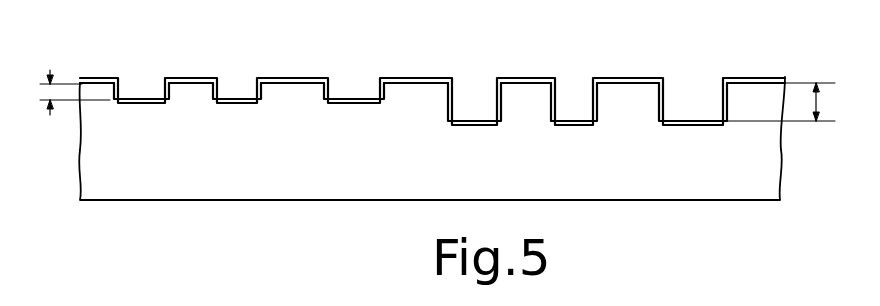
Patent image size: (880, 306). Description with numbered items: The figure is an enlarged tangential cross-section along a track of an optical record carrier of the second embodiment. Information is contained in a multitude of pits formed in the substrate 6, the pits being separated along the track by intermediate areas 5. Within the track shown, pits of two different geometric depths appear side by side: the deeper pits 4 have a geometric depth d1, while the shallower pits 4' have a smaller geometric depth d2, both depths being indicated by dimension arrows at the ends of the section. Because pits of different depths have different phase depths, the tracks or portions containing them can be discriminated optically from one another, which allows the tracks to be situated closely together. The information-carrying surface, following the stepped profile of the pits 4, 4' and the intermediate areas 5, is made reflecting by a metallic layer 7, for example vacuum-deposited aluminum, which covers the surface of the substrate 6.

The pits 4 is at (587, 67).
The pits 4' is at (249, 56).
The intermediate areas 5 is at (289, 84).
The substrate 6 is at (693, 183).
The metallic layer 7 is at (413, 77).
The geometric depth of pits 4 d1 is at (820, 102).
The geometric depth of pits 4' d2 is at (48, 90).